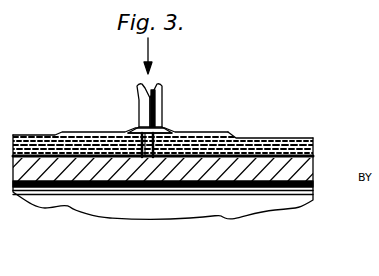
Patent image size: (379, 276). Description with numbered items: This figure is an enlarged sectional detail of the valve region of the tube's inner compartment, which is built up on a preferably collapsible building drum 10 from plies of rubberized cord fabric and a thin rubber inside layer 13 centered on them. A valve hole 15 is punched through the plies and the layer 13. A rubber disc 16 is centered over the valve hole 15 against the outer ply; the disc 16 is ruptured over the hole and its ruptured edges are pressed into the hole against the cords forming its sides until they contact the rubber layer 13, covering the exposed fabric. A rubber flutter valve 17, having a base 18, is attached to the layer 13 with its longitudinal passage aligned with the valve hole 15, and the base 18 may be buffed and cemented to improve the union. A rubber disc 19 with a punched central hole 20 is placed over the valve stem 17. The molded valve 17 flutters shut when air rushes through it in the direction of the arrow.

The building drum 10 is at (314, 170).
The rubber inside layer 13 is at (270, 137).
The valve hole 15 is at (163, 130).
The rubber disc 16 is at (233, 155).
The rubber flutter valve 17 is at (160, 92).
The valve base 18 is at (125, 128).
The rubber disc with central hole 19 is at (103, 128).
The central hole 20 is at (138, 118).